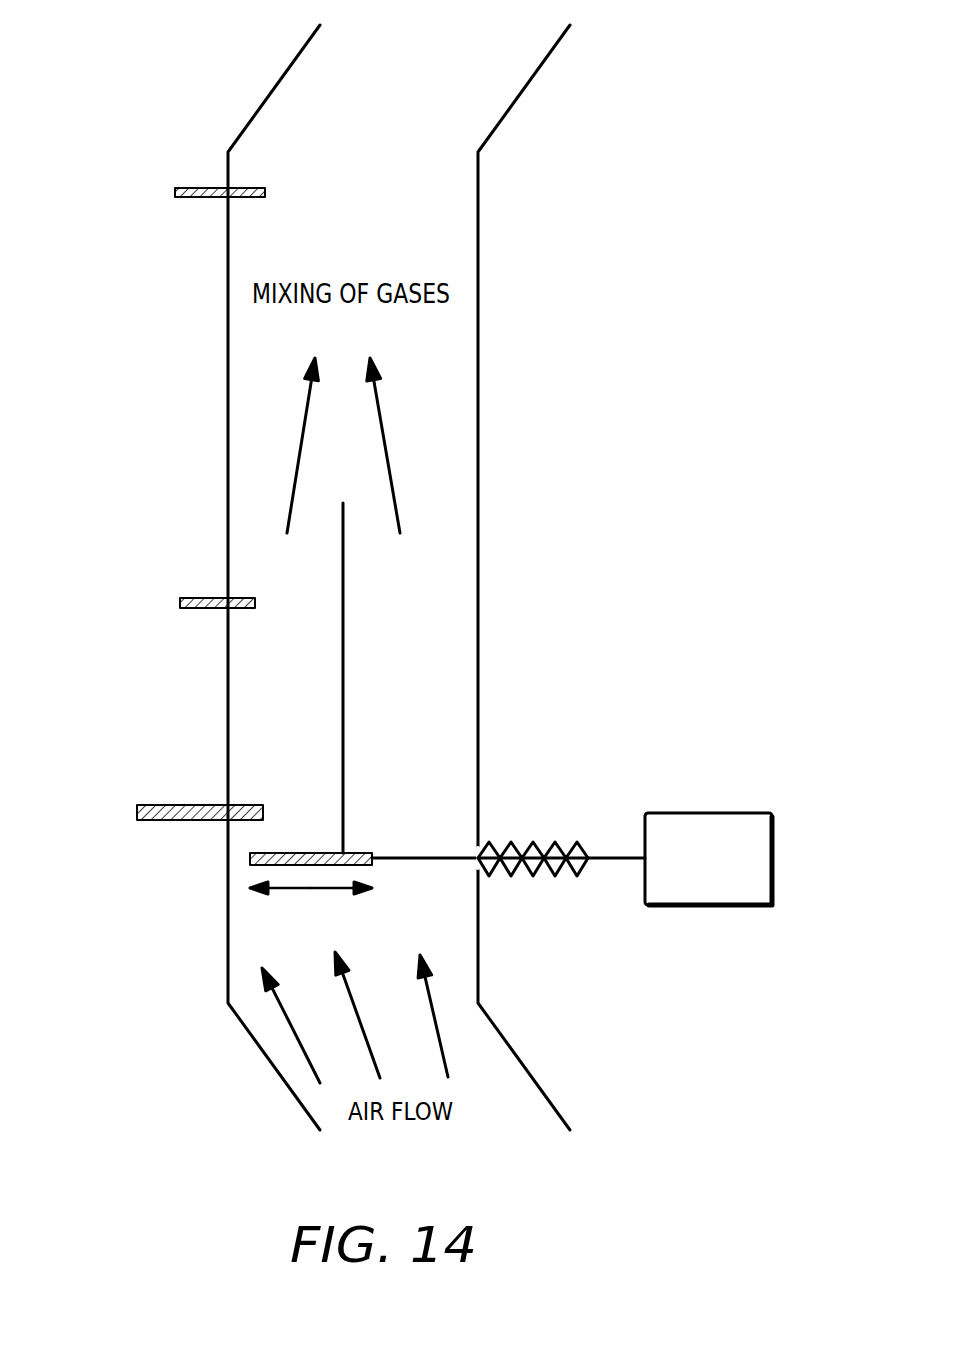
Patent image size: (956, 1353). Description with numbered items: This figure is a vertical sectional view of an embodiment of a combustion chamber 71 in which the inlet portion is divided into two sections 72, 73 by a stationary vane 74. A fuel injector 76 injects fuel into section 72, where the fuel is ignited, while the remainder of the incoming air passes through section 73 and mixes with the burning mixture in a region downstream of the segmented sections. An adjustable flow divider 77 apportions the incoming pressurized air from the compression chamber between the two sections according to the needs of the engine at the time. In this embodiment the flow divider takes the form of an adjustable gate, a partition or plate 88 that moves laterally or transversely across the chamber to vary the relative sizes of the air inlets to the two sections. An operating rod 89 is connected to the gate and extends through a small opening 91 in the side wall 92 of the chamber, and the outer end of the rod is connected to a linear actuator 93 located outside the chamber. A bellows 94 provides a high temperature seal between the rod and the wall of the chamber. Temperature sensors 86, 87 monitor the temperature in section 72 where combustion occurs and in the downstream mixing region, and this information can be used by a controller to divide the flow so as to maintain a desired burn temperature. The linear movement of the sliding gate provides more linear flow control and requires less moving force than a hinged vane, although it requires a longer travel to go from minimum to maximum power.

The combustion chamber 71 is at (443, 535).
The section 72 is at (302, 675).
The section 73 is at (425, 675).
The stationary vane 74 is at (343, 623).
The fuel injector 76 is at (207, 805).
The adjustable flow divider 77 is at (443, 792).
The temperature sensor 86 is at (207, 598).
The temperature sensor 87 is at (203, 188).
The plate 88 is at (312, 853).
The operating rod 89 is at (450, 859).
The opening 91 is at (473, 865).
The side wall 92 is at (478, 683).
The linear actuator 93 is at (708, 818).
The bellows 94 is at (535, 845).